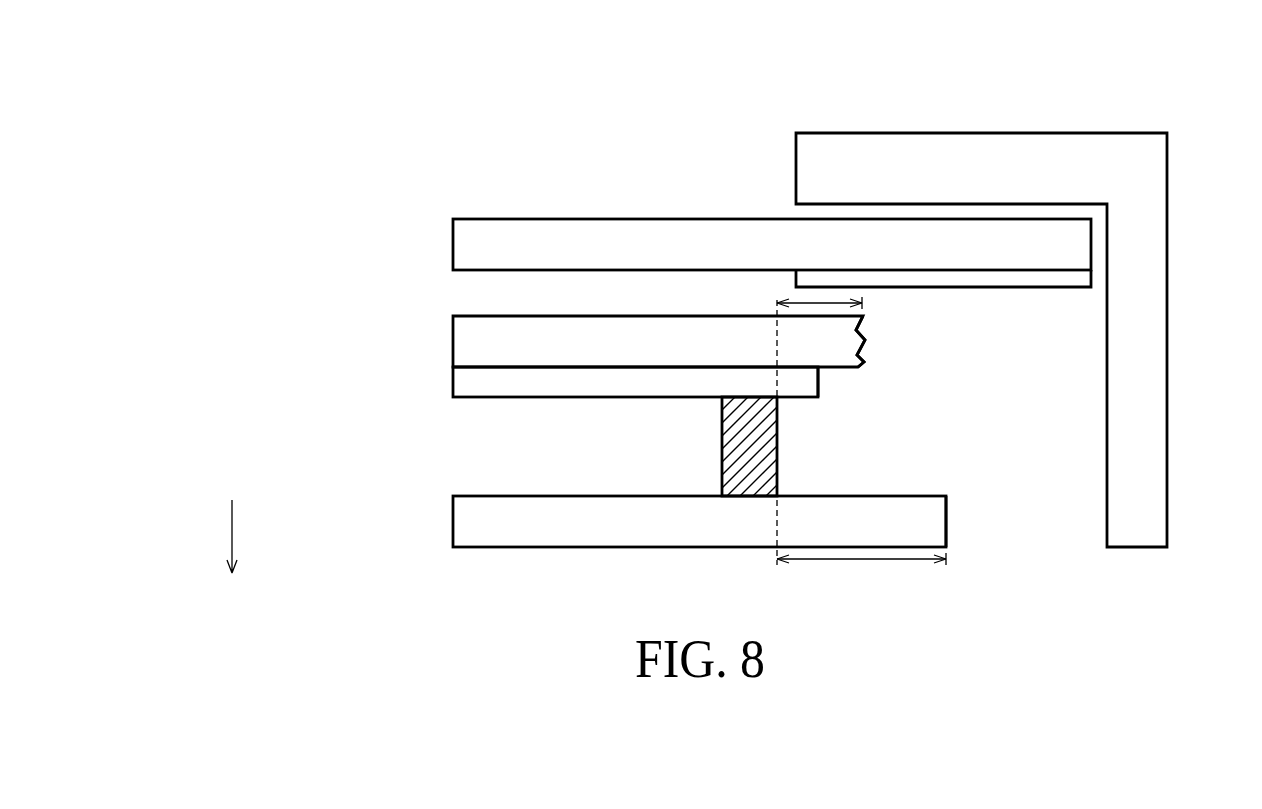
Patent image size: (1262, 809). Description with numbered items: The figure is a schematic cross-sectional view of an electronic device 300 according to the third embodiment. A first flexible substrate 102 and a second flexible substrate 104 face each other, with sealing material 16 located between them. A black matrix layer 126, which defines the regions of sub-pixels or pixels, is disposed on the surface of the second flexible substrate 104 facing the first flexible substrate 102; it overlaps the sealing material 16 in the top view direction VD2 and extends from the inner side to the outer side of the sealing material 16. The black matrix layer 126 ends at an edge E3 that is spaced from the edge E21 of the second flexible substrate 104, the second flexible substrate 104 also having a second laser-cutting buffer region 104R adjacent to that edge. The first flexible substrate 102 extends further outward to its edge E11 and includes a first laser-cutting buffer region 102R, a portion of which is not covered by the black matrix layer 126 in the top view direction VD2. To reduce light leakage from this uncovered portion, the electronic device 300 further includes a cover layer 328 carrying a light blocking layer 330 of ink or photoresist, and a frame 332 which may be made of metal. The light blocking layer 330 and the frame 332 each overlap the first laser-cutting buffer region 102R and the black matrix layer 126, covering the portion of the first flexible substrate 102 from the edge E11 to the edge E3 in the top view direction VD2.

The electronic device 300 is at (880, 87).
The frame 332 is at (1150, 178).
The cover layer 328 is at (470, 247).
The light blocking layer 330 is at (1063, 280).
The second flexible substrate 104 is at (470, 344).
The second laser-cutting buffer region 104R is at (820, 305).
The edge of the second flexible substrate E21 is at (866, 342).
The black matrix layer 126 is at (470, 381).
The edge of the black matrix layer E3 is at (820, 380).
The sealing material 16 is at (745, 425).
The first flexible substrate 102 is at (470, 526).
The edge of the first flexible substrate E11 is at (947, 522).
The first laser-cutting buffer region 102R is at (861, 574).
The top view direction VD2 is at (200, 544).